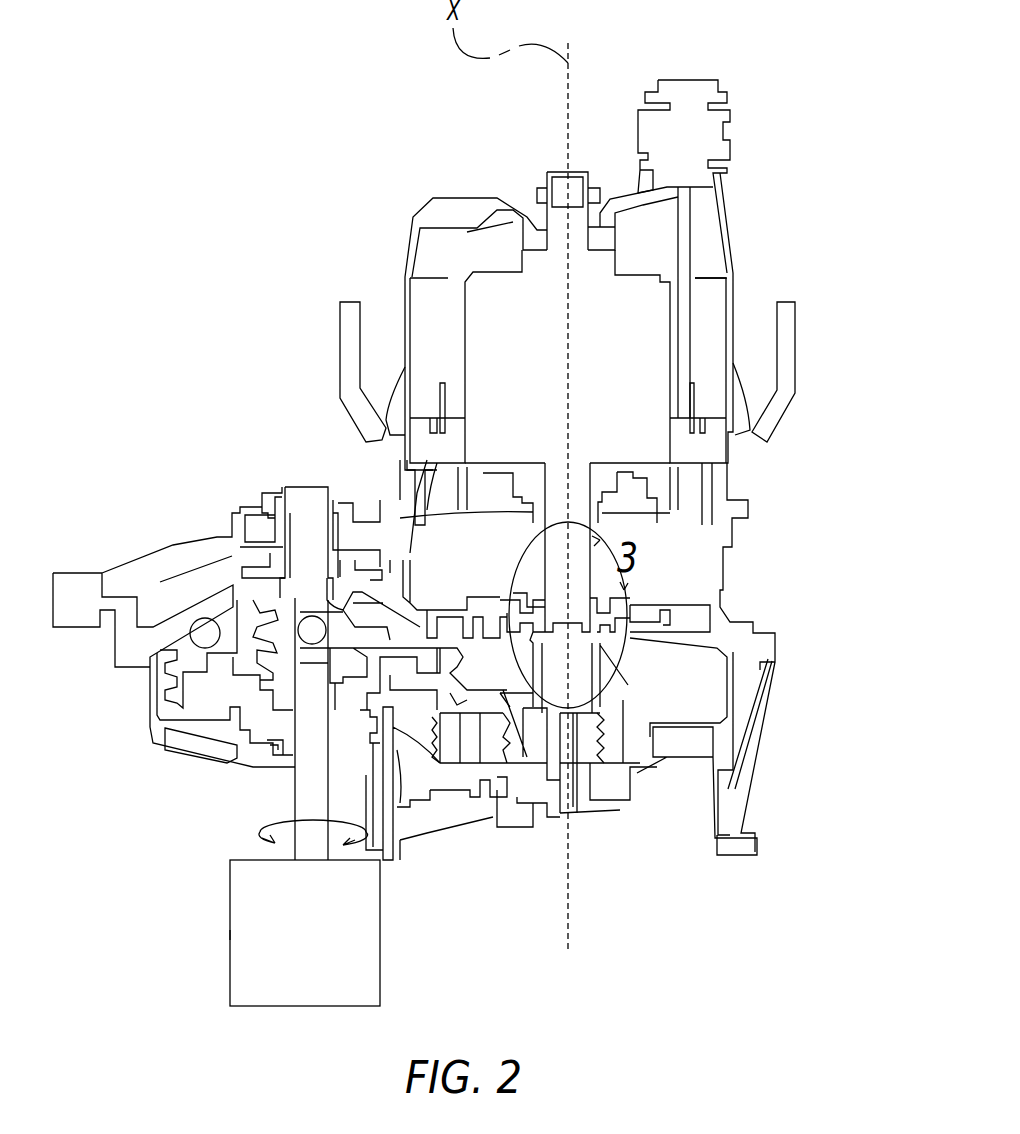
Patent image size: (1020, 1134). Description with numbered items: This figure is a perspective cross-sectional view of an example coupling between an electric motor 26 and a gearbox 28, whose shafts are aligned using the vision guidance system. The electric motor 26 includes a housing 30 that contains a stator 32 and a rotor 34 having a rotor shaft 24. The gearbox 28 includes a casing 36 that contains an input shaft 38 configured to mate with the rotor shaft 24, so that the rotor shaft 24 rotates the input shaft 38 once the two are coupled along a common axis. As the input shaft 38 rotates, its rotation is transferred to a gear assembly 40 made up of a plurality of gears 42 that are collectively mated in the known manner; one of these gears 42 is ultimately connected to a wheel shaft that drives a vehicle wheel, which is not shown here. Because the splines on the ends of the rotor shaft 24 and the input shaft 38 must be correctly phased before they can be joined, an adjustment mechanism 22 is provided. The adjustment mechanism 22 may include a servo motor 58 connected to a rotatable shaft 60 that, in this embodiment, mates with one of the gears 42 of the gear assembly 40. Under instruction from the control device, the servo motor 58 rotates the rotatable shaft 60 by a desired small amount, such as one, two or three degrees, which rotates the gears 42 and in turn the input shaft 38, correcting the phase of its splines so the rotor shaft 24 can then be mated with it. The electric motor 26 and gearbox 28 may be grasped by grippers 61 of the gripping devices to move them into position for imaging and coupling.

The adjustment mechanism 22 is at (322, 947).
The rotor shaft 24 is at (547, 570).
The electric motor 26 is at (400, 230).
The gearbox 28 is at (786, 700).
The housing 30 is at (685, 242).
The stator 32 is at (690, 507).
The rotor 34 is at (630, 358).
The casing 36 is at (754, 778).
The input shaft 38 is at (587, 680).
The gear assembly 40 is at (460, 773).
The gears 42 is at (257, 613).
The servo motor 58 is at (230, 932).
The rotatable shaft 60 is at (293, 790).
The grippers 61 is at (342, 342).